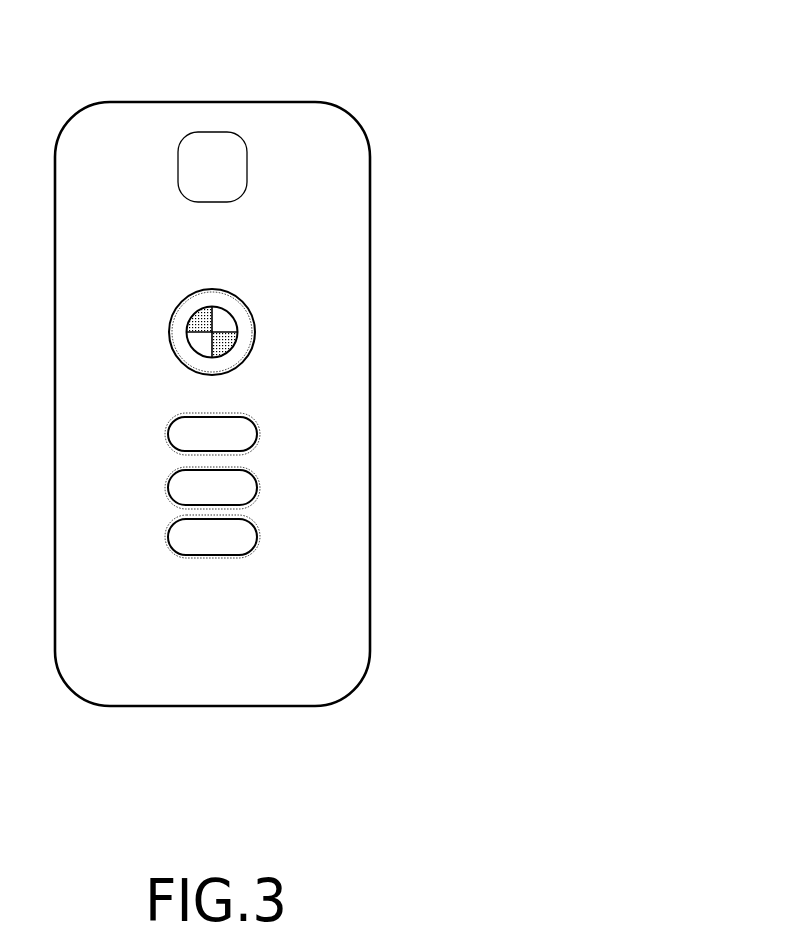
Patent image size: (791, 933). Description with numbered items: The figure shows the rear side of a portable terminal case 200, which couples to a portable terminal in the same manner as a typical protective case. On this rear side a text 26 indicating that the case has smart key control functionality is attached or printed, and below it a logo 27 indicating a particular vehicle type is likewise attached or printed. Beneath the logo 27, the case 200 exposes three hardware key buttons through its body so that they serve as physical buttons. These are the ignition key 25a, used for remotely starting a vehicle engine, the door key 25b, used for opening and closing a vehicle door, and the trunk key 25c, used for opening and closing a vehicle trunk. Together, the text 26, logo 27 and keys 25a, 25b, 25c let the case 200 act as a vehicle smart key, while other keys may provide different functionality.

The portable terminal case 200 is at (330, 72).
The text 26 is at (278, 248).
The logo 27 is at (255, 330).
The ignition key 25a is at (260, 430).
The door key 25b is at (260, 482).
The trunk key 25c is at (260, 533).